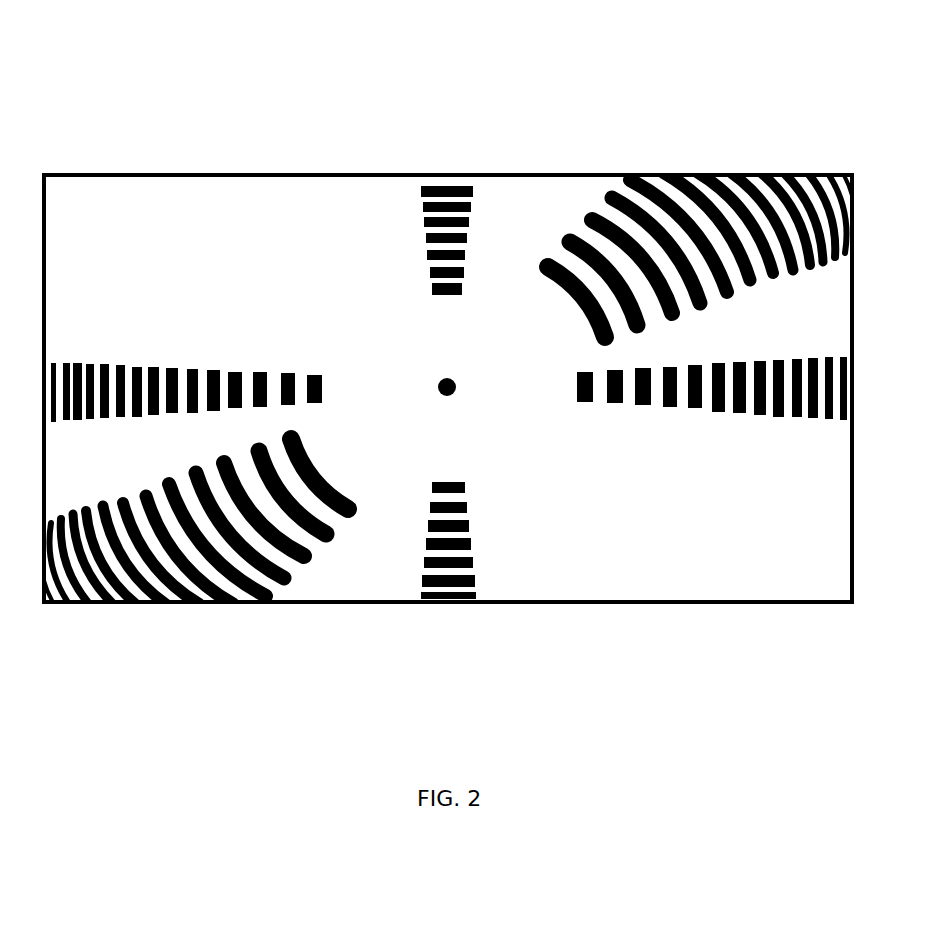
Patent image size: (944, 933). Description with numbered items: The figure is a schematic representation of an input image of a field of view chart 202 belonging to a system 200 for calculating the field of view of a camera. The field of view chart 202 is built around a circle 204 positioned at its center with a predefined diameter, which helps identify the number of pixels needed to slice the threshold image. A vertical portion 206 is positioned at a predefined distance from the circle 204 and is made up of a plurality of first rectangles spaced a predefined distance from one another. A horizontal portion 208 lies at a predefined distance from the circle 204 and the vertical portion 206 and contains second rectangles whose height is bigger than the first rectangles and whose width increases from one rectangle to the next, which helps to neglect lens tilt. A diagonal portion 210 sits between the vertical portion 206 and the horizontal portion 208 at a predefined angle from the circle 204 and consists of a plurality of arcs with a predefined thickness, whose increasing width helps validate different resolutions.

The system for calculating a field of view 200 is at (441, 49).
The field of view chart 202 is at (503, 173).
The circle 204 is at (451, 378).
The vertical portion 206 is at (463, 277).
The horizontal portion 208 is at (152, 363).
The diagonal portion 210 is at (748, 287).